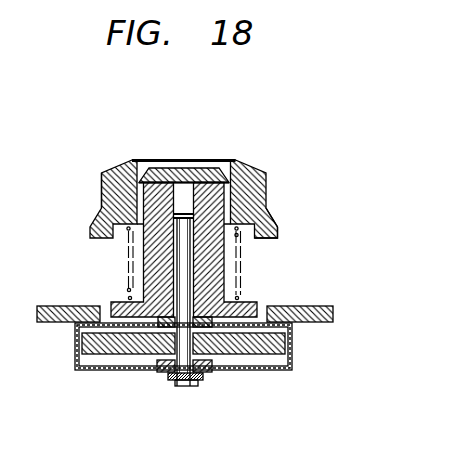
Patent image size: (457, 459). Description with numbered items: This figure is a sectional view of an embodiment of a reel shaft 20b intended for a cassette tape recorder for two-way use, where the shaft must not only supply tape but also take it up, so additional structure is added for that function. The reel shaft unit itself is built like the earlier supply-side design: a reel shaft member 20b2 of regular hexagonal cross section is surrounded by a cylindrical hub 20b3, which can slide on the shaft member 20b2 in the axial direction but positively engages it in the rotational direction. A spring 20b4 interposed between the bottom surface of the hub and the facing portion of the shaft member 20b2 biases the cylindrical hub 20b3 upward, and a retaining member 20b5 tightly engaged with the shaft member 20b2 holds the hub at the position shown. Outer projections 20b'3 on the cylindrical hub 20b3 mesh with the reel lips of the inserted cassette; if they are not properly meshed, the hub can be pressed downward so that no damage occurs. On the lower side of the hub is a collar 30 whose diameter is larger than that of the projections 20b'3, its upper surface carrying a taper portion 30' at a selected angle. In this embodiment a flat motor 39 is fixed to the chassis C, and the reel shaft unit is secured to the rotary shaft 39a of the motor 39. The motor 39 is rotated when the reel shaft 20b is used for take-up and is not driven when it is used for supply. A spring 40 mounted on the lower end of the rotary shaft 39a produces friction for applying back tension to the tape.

The reel shaft 20b is at (175, 204).
The reel shaft member 20b2 is at (212, 272).
The cylindrical hub 20b3 is at (243, 178).
The outer projections of the cylindrical hub 20b'3 is at (61, 190).
The spring 20b4 is at (128, 289).
The retaining member 20b5 is at (209, 169).
The collar 30 is at (294, 233).
The taper portion 30' is at (299, 211).
The flat motor 39 is at (113, 371).
The rotary shaft 39a is at (185, 388).
The spring 40 is at (167, 377).
The chassis C is at (53, 323).